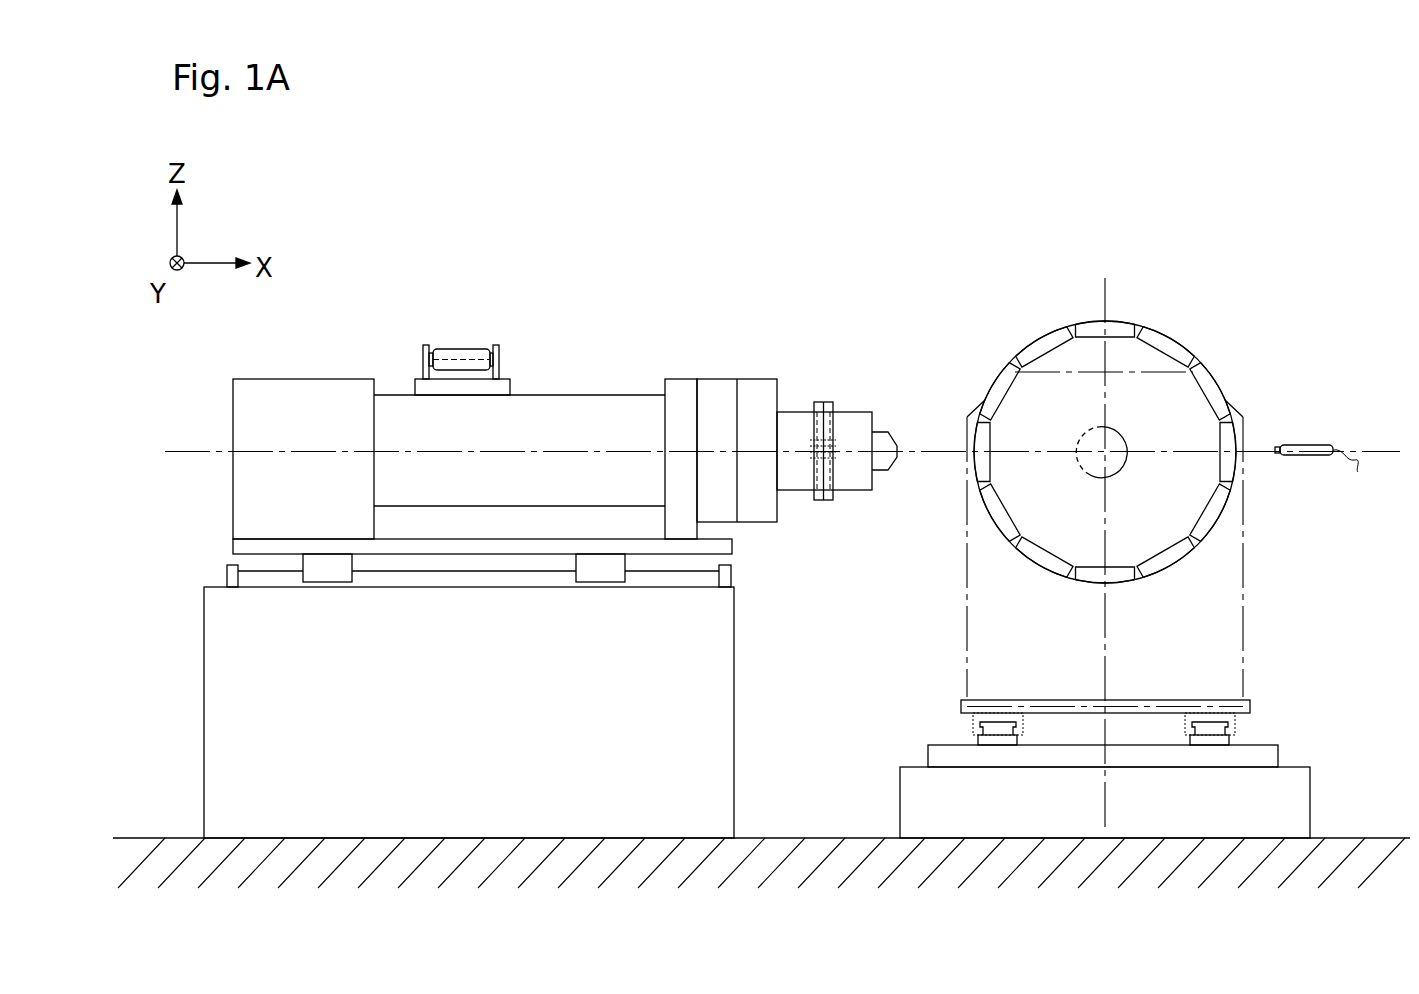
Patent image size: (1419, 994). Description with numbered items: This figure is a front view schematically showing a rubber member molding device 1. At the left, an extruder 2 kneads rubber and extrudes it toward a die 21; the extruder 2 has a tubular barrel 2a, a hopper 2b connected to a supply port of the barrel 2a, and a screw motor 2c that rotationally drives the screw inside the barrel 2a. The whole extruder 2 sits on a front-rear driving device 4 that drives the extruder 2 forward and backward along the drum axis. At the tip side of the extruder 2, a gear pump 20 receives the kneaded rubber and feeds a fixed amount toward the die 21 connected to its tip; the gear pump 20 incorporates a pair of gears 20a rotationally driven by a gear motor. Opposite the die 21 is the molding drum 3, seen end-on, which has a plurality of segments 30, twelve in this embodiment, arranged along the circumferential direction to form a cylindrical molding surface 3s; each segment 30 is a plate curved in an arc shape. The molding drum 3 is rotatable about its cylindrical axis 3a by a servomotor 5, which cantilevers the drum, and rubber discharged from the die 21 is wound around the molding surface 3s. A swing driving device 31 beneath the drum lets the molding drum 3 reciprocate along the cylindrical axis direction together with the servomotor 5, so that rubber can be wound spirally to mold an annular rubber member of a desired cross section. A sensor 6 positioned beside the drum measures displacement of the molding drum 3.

The rubber member molding device 1 is at (661, 202).
The extruder 2 is at (622, 342).
The barrel 2a is at (548, 395).
The hopper 2b is at (501, 350).
The screw motor 2c is at (312, 379).
The gear pump 20 is at (850, 412).
The pair of gears 20a is at (840, 463).
The die 21 is at (888, 432).
The molding drum 3 is at (1122, 548).
The molding surface 3s is at (1138, 322).
The cylindrical axis 3a is at (1100, 460).
The segments 30 is at (1202, 394).
The swing driving device 31 is at (1268, 735).
The front-rear driving device 4 is at (753, 659).
The servomotor 5 is at (1258, 588).
The sensor 6 is at (1313, 440).